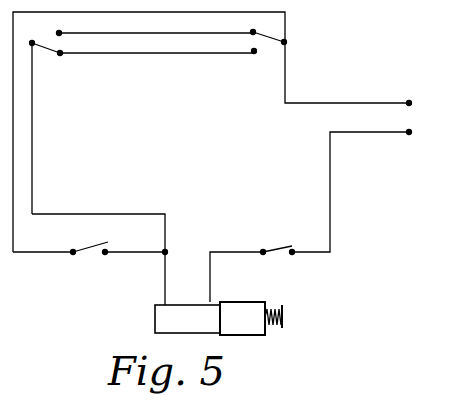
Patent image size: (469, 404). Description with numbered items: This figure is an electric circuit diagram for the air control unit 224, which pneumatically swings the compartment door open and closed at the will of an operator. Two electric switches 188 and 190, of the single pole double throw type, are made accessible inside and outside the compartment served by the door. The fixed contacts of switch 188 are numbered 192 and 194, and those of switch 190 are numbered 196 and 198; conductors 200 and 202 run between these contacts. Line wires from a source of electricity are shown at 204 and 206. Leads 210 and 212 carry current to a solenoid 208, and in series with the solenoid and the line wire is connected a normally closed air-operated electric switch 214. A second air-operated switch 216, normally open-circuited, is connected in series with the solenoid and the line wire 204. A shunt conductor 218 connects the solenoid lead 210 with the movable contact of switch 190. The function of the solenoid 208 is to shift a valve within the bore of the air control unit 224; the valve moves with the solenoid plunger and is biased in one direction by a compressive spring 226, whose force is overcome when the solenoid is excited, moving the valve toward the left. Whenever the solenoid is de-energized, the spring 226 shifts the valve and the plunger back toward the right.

The electric switch 188 is at (285, 33).
The electric switch 190 is at (44, 55).
The fixed contact 192 is at (253, 30).
The fixed contact 194 is at (254, 53).
The fixed contact 196 is at (60, 32).
The fixed contact 198 is at (62, 55).
The conductor 200 is at (185, 31).
The conductor 202 is at (175, 53).
The line wire 204 is at (358, 103).
The line wire 206 is at (381, 132).
The solenoid 208 is at (163, 318).
The solenoid lead 210 is at (165, 280).
The solenoid lead 212 is at (210, 272).
The air-operated electric switch 214 is at (279, 250).
The air-operated switch 216 is at (90, 249).
The shunt conductor 218 is at (84, 214).
The air control unit 224 is at (238, 305).
The compressive spring 226 is at (284, 306).